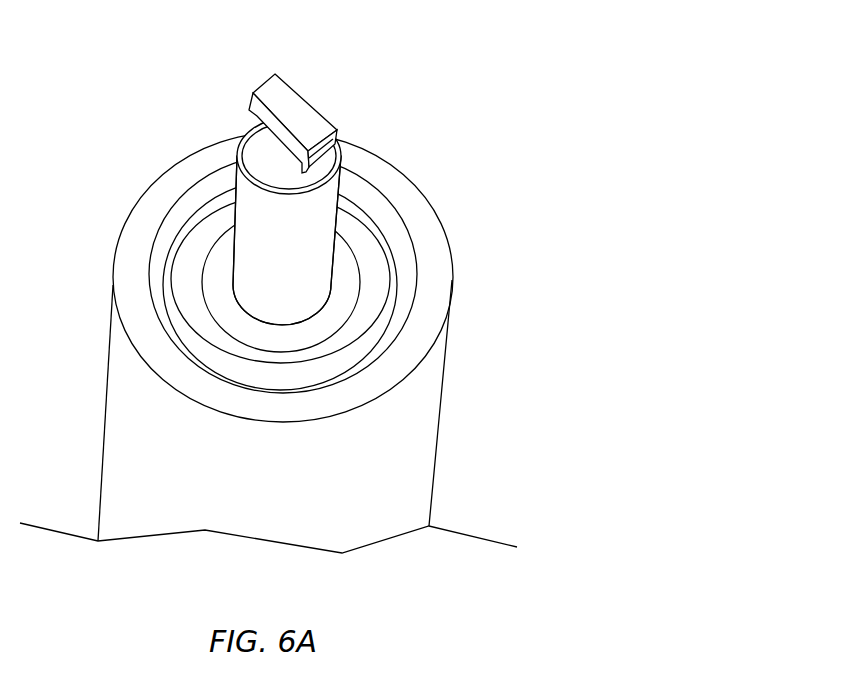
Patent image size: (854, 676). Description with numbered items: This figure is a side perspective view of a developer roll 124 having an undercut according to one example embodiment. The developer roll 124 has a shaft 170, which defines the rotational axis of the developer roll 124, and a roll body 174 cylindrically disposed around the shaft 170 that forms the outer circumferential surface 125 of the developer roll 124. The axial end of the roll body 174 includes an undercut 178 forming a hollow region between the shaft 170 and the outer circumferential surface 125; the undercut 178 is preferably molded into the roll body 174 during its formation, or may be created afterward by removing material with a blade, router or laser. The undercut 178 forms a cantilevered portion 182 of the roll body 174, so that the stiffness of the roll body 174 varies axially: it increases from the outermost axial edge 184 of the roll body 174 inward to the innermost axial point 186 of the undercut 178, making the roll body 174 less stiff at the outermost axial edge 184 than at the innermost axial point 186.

The developer roll 124 is at (448, 69).
The outer circumferential surface 125 is at (397, 440).
The shaft 170 is at (340, 187).
The roll body 174 is at (133, 243).
The undercut 178 is at (211, 203).
The cantilevered portion 182 is at (425, 336).
The outermost axial edge 184 is at (147, 339).
The innermost axial point 186 is at (188, 299).